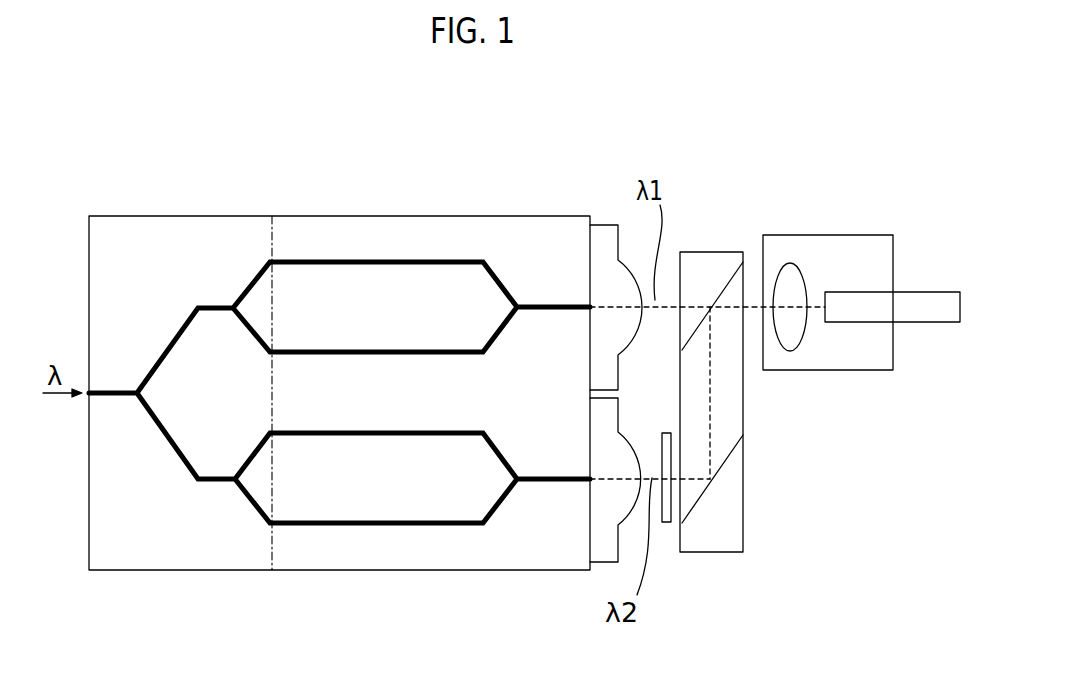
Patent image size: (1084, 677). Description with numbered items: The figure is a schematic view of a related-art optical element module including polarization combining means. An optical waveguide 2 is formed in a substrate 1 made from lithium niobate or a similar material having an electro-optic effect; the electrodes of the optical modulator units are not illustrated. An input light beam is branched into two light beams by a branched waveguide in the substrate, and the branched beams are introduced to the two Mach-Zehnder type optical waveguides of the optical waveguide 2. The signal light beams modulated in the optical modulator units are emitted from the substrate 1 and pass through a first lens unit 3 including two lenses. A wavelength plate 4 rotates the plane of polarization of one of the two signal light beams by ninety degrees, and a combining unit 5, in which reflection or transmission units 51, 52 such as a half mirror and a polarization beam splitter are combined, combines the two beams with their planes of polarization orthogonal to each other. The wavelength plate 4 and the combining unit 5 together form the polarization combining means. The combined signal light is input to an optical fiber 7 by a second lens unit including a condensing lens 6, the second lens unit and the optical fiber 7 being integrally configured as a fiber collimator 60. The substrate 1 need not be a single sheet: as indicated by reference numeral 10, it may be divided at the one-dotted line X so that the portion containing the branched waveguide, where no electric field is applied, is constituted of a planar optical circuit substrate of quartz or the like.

The substrate 1 is at (492, 164).
The planar optical circuit substrate 10 is at (245, 230).
The optical waveguide 2 is at (339, 431).
The first lens unit 3 is at (600, 225).
The wavelength plate 4 is at (665, 522).
The combining unit 5 is at (734, 402).
The reflection or transmission unit 51 is at (722, 465).
The reflection or transmission unit 52 is at (727, 252).
The condensing lens 6 is at (790, 263).
The fiber collimator 60 is at (847, 370).
The optical fiber 7 is at (928, 322).
The one-dotted line X is at (270, 548).